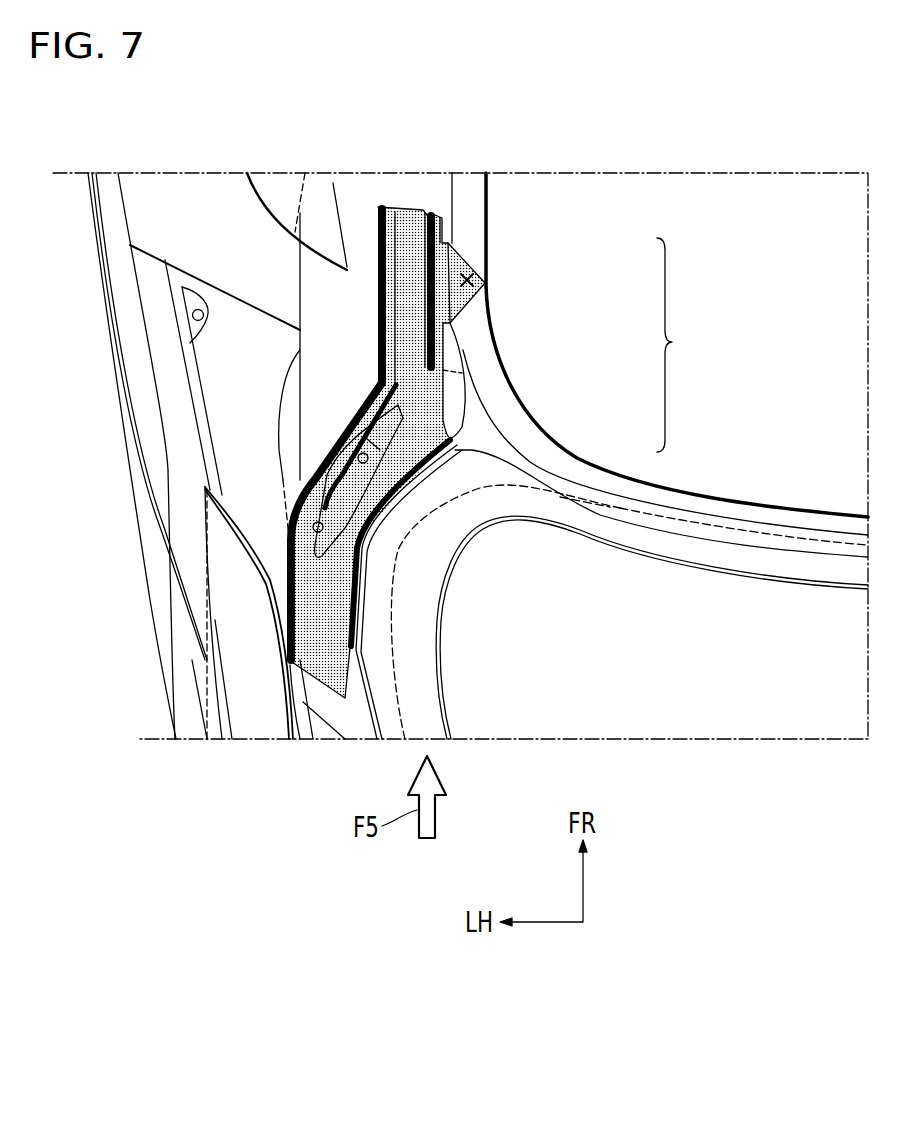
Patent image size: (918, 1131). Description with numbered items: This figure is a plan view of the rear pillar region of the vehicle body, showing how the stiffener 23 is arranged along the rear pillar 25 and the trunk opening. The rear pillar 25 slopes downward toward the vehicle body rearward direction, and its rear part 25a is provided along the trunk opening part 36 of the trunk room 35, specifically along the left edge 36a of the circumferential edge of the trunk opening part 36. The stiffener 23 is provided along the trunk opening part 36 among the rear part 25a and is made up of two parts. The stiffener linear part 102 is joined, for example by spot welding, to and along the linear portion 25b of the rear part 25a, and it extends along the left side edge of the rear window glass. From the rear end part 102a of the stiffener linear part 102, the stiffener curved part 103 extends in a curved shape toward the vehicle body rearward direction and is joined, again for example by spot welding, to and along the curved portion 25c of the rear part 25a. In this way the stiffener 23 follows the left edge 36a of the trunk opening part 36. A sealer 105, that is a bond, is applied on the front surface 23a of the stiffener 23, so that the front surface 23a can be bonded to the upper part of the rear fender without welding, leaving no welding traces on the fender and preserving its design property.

The stiffener 23 is at (495, 473).
The front surface of the stiffener 23a is at (380, 384).
The rear pillar 25 is at (345, 200).
The rear part of the rear pillar 25a is at (328, 420).
The linear portion of the rear part of the rear pillar 25b is at (360, 295).
The curved portion of the rear part of the rear pillar 25c is at (270, 515).
The trunk room 35 is at (767, 688).
The trunk opening part 36 is at (430, 715).
The left edge of the trunk opening part 36a is at (405, 625).
The stiffener linear part 102 is at (415, 343).
The rear end part of the stiffener linear part 102a is at (428, 402).
The stiffener curved part 103 is at (367, 513).
The sealer 105 is at (386, 226).